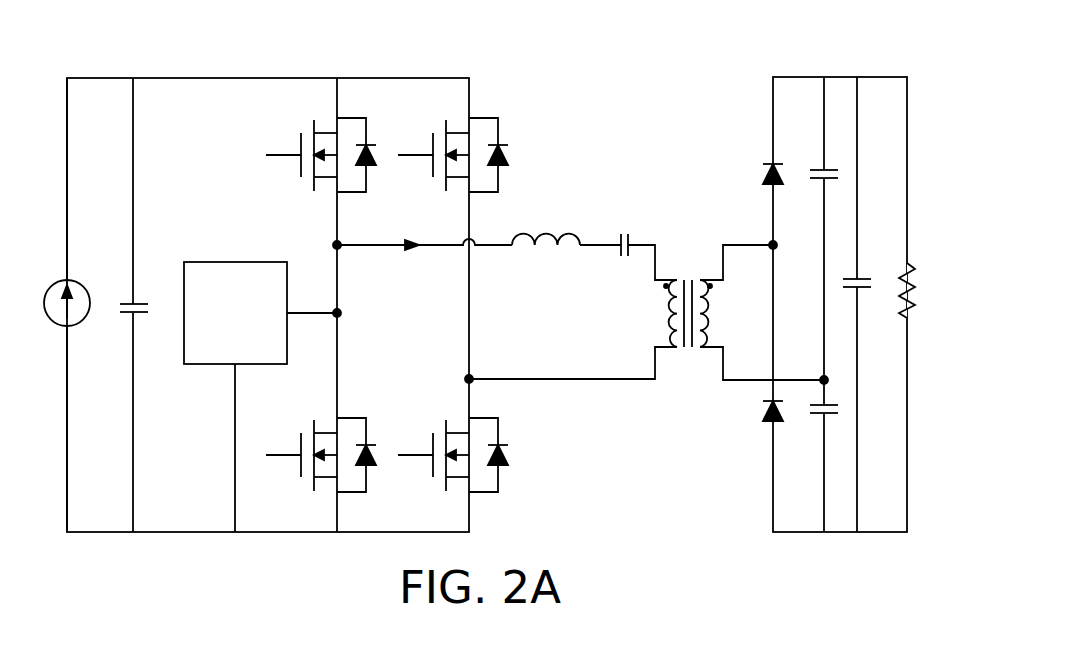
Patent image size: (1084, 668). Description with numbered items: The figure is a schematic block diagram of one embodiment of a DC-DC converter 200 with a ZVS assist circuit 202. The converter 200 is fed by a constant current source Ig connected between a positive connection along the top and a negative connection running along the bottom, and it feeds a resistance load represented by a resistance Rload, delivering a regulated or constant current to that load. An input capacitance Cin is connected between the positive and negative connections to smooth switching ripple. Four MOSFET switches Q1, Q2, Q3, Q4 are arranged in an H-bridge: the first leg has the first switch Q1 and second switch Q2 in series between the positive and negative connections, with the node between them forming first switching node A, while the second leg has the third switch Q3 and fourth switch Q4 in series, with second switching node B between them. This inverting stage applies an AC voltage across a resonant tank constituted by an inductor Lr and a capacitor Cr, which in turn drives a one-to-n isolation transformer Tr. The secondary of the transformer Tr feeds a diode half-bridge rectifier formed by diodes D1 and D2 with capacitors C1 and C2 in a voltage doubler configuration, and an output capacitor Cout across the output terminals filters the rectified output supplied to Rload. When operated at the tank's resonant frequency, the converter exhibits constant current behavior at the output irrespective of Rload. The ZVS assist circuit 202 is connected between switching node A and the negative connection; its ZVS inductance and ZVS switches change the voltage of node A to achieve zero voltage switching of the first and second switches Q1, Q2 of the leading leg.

The DC-DC converter 200 is at (500, 269).
The ZVS assist circuit 202 is at (235, 313).
The first switch Q1 is at (318, 153).
The second switch Q2 is at (318, 449).
The third switch Q3 is at (450, 153).
The fourth switch Q4 is at (450, 449).
The inductor Lr is at (546, 230).
The capacitor Cr is at (622, 234).
The transformer Tr is at (688, 299).
The rectifier diode D1 is at (760, 185).
The rectifier diode D2 is at (759, 422).
The capacitor C1 is at (817, 163).
The capacitor C2 is at (817, 422).
The input capacitance Cin is at (147, 324).
The output capacitor Cout is at (867, 272).
The resistance load Rload is at (927, 290).
The constant current source Ig is at (71, 305).